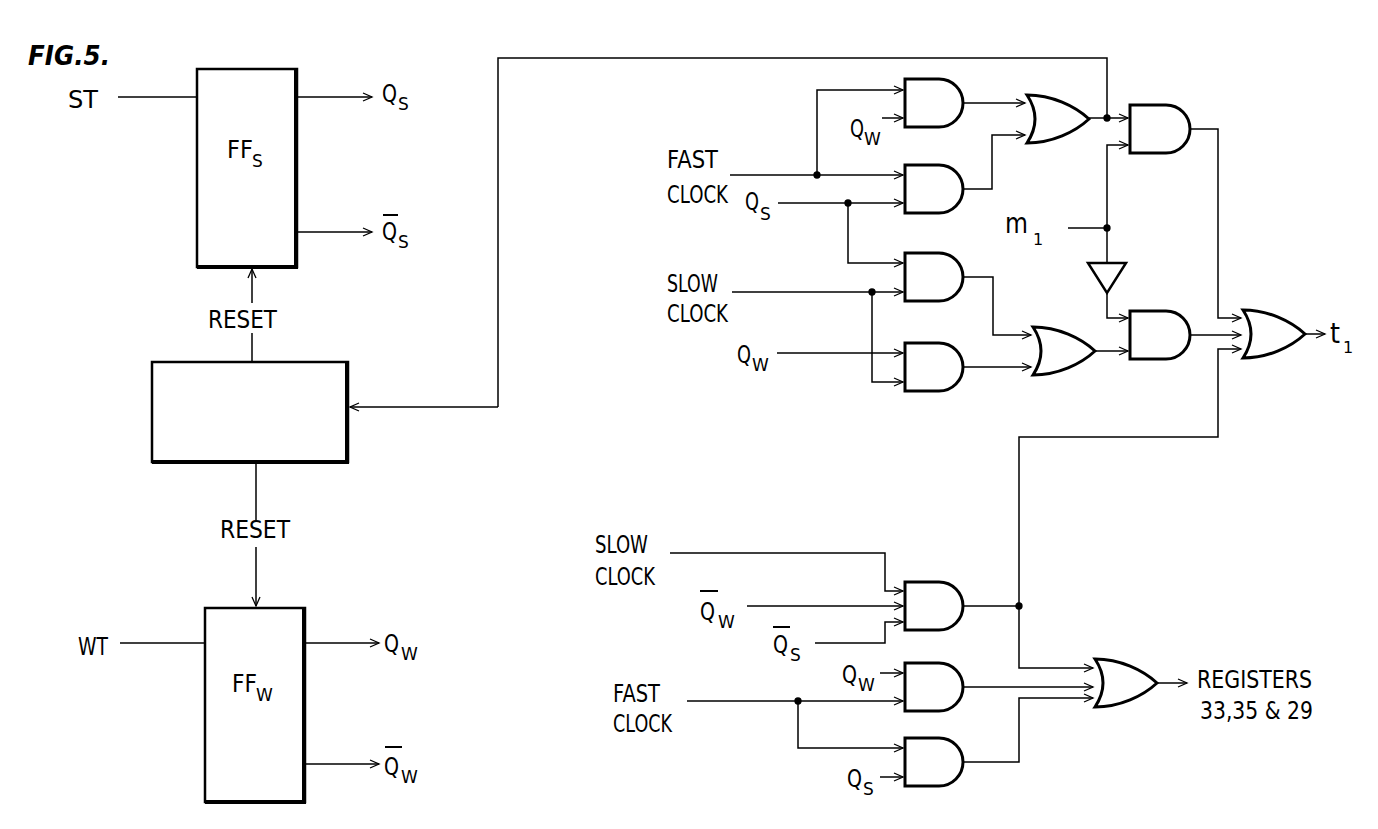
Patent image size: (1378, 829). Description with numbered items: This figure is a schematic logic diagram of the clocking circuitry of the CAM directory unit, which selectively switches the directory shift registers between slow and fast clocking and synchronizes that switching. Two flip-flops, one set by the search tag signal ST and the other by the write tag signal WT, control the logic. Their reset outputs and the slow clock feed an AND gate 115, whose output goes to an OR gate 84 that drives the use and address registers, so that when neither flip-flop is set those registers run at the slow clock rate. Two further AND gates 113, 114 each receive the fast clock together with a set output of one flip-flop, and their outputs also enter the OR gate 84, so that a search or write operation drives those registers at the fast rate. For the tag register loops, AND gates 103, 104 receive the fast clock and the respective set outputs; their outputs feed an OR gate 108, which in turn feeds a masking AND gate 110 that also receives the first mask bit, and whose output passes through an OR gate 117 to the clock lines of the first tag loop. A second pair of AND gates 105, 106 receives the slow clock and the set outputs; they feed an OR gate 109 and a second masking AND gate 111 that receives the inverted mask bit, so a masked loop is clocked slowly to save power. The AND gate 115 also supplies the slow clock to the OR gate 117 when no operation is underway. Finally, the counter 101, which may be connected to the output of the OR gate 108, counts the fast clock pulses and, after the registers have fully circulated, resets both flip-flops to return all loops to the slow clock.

The counter 101 is at (152, 440).
The AND gate 103 is at (944, 201).
The AND gate 104 is at (944, 115).
The AND gate 105 is at (944, 289).
The AND gate 106 is at (944, 379).
The OR gate 108 is at (1069, 132).
The OR gate 109 is at (1075, 364).
The masking AND gate 110 is at (1169, 141).
The masking AND gate 111 is at (1169, 347).
The AND gate 113 is at (944, 774).
The AND gate 114 is at (944, 699).
The AND gate 115 is at (944, 618).
The OR gate 117 is at (1285, 347).
The OR gate 84 is at (1134, 696).